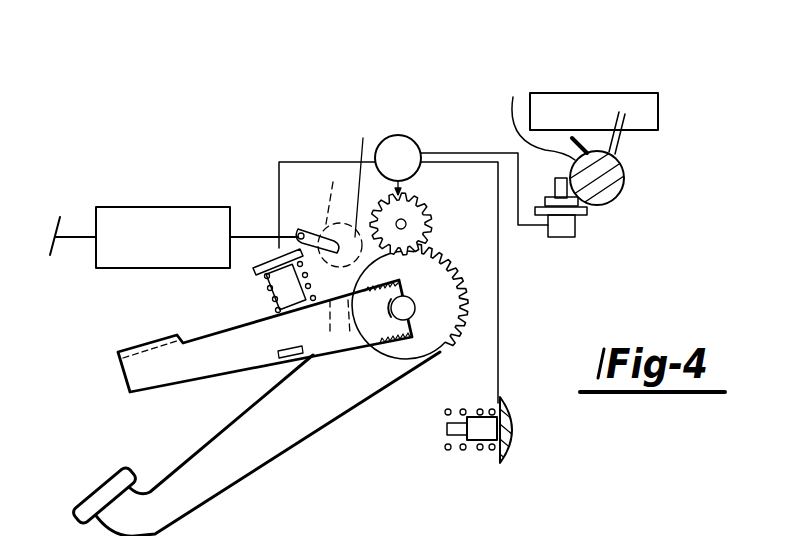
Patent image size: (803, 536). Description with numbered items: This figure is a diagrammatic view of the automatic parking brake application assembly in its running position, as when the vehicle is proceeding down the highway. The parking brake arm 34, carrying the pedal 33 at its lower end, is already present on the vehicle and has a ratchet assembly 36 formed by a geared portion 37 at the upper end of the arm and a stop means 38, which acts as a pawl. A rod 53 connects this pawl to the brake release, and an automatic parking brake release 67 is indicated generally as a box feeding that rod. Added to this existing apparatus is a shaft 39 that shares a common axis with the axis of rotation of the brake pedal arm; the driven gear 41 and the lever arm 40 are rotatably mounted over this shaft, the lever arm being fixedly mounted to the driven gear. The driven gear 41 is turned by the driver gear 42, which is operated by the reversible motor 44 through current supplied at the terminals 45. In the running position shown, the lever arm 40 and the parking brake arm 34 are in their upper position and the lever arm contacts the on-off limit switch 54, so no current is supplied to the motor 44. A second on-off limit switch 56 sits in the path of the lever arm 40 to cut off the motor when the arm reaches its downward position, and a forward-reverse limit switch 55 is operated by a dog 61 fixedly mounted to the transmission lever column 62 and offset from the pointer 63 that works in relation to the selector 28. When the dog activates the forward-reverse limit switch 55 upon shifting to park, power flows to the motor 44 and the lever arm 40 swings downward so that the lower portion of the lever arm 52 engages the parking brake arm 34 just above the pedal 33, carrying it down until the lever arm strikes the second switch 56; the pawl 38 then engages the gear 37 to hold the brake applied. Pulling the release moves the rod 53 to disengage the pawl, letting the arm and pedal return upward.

The selector 28 is at (640, 92).
The pedal 33 is at (88, 492).
The parking brake arm 34 is at (223, 495).
The ratchet assembly 36 is at (337, 192).
The geared portion 37 is at (363, 138).
The stop means 38 is at (297, 228).
The shaft 39 is at (408, 312).
The lever arm 40 is at (230, 382).
The driven gear 41 is at (467, 310).
The driver gear 42 is at (430, 216).
The reversible motor 44 is at (399, 134).
The terminals 45 is at (426, 152).
The lower portion of the lever arm 52 is at (120, 374).
The rod 53 is at (250, 240).
The on-off limit switch 54 is at (268, 294).
The forward-reverse limit switch 55 is at (560, 238).
The second on-off limit switch 56 is at (490, 443).
The dog 61 is at (539, 114).
The transmission lever column 62 is at (625, 182).
The pointer 63 is at (620, 150).
The automatic parking brake release 67 is at (126, 204).